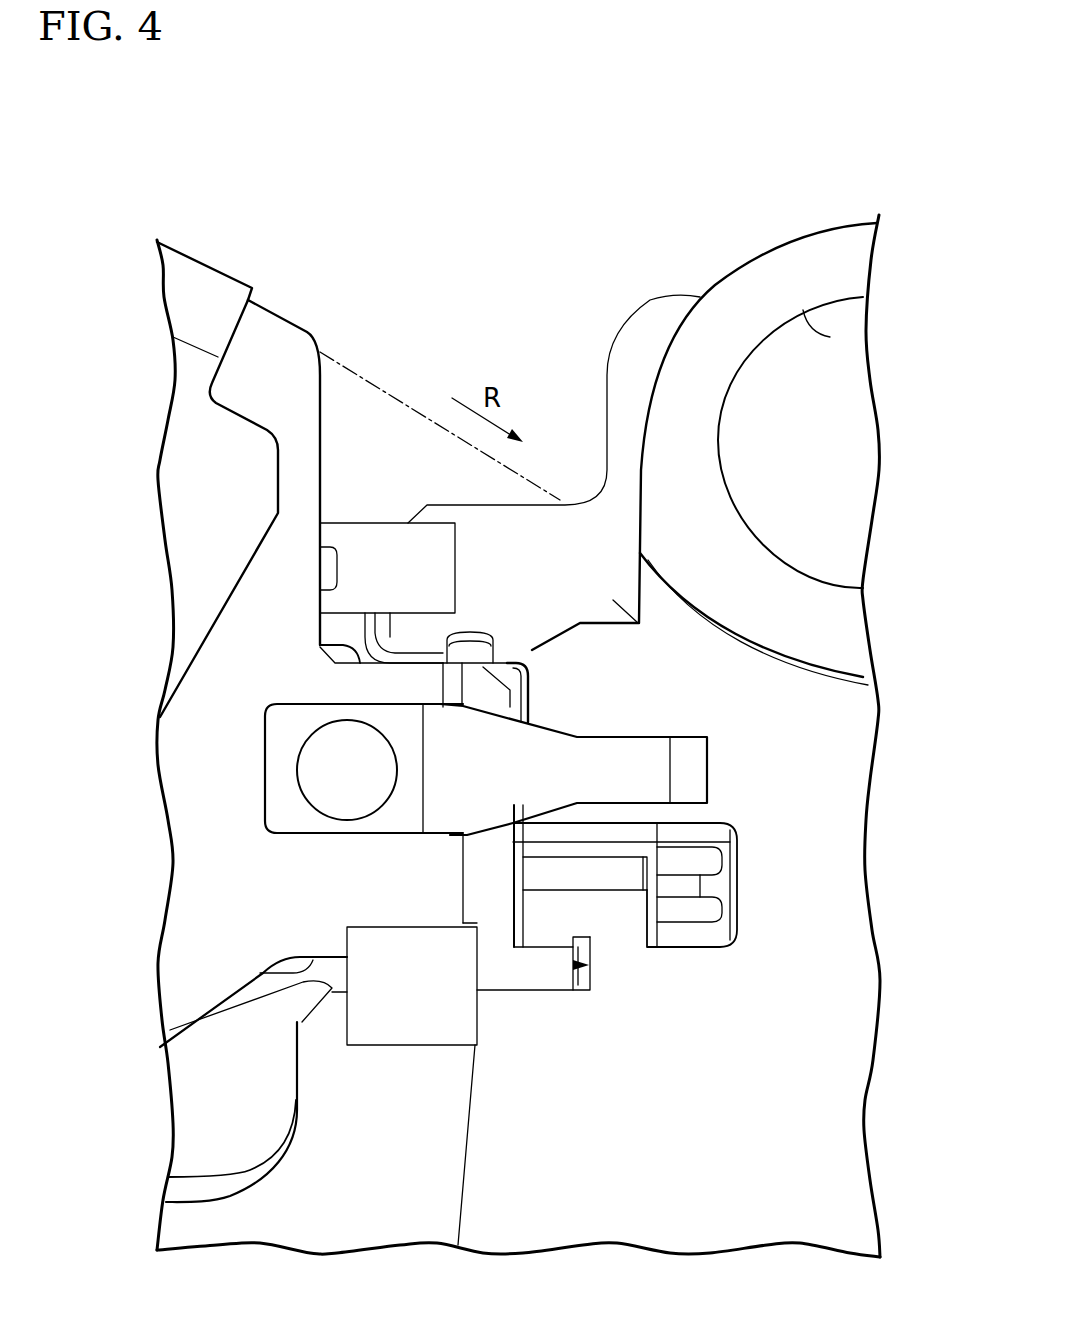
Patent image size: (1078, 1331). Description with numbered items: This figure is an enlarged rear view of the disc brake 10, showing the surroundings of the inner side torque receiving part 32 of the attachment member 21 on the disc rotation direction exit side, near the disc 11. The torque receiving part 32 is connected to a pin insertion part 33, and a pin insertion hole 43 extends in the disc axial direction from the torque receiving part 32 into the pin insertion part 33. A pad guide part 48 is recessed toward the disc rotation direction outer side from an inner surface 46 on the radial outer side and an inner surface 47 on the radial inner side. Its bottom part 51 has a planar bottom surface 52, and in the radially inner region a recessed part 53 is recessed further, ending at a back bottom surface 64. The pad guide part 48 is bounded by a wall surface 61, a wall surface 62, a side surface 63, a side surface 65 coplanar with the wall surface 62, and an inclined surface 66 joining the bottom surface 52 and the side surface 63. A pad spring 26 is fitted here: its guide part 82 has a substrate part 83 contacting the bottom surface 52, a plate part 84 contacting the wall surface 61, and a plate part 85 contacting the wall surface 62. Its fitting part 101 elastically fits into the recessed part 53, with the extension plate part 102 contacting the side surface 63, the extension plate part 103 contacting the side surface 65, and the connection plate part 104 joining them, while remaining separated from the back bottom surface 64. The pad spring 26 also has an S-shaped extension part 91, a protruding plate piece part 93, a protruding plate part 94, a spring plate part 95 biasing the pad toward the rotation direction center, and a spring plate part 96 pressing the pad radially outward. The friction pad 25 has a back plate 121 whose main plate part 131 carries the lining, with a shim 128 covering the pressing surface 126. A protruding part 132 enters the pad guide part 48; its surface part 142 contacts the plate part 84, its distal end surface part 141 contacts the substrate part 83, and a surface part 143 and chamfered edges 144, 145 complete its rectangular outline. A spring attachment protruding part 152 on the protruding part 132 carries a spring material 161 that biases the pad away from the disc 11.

The disc brake 10 is at (546, 160).
The disc 11 is at (407, 403).
The attachment member 21 is at (822, 214).
The friction pad 25 is at (272, 290).
The pad spring 26 is at (373, 506).
The inner side torque receiving part 32 is at (780, 738).
The pin insertion part 33 is at (758, 272).
The pin insertion hole 43 is at (830, 337).
The inner surface on the disc radial direction outer side 46 is at (388, 632).
The inner surface on the disc radial direction inner side 47 is at (297, 1072).
The pad guide part 48 is at (440, 870).
The bottom part 51 is at (540, 703).
The bottom surface 52 is at (300, 727).
The recessed part 53 is at (520, 933).
The wall surface 61 is at (432, 664).
The wall surface 62 is at (323, 980).
The side surface 63 is at (573, 964).
The back bottom surface 64 is at (587, 980).
The side surface 65 is at (303, 1022).
The inclined surface 66 is at (505, 877).
The guide part 82 is at (128, 723).
The substrate part 83 is at (527, 685).
The plate part 84 is at (435, 663).
The plate part 85 is at (487, 995).
The extension part 91 is at (737, 880).
The protruding plate piece part 93 is at (473, 632).
The protruding plate part 94 is at (267, 600).
The spring plate part 95 is at (357, 550).
The spring plate part 96 is at (410, 1027).
The fitting part 101 is at (560, 1012).
The extension plate part 102 is at (657, 857).
The extension plate part 103 is at (485, 973).
The connection plate part 104 is at (590, 953).
The back plate 121 is at (277, 347).
The pressing surface 126 is at (297, 467).
The shim 128 is at (195, 297).
The main plate part 131 is at (375, 623).
The protruding part 132 is at (370, 858).
The distal end surface part 141 is at (497, 940).
The surface part 142 is at (319, 645).
The surface part 143 is at (293, 973).
The chamfered edge 144 is at (580, 622).
The chamfered edge 145 is at (540, 948).
The spring attachment protruding part 152 is at (333, 767).
The spring material 161 is at (285, 718).